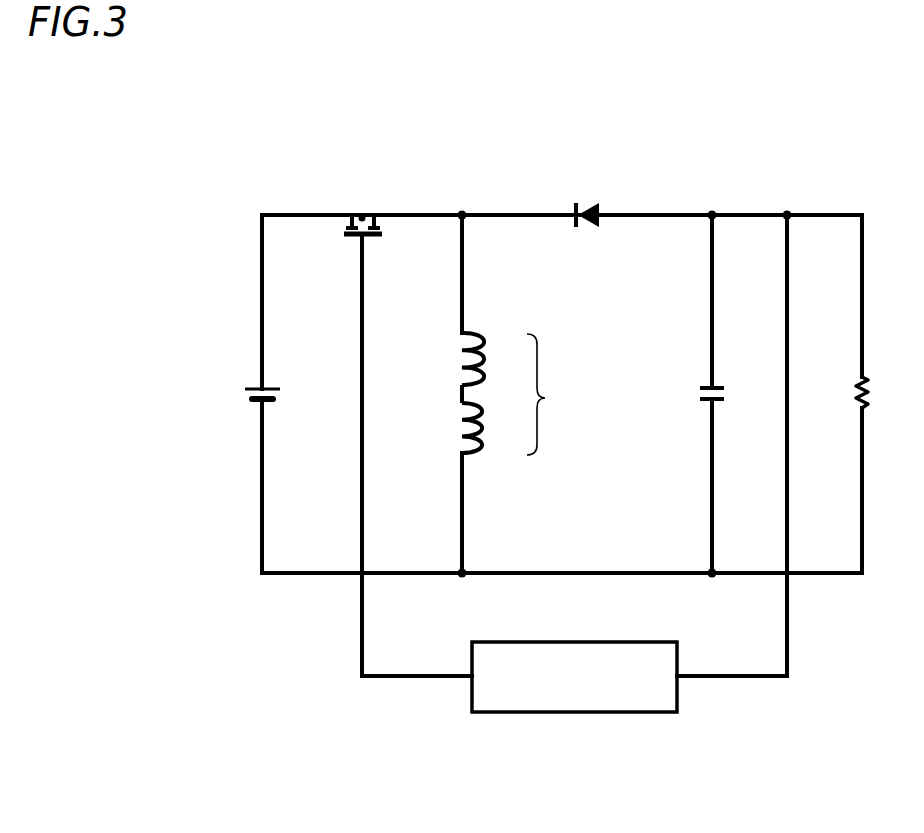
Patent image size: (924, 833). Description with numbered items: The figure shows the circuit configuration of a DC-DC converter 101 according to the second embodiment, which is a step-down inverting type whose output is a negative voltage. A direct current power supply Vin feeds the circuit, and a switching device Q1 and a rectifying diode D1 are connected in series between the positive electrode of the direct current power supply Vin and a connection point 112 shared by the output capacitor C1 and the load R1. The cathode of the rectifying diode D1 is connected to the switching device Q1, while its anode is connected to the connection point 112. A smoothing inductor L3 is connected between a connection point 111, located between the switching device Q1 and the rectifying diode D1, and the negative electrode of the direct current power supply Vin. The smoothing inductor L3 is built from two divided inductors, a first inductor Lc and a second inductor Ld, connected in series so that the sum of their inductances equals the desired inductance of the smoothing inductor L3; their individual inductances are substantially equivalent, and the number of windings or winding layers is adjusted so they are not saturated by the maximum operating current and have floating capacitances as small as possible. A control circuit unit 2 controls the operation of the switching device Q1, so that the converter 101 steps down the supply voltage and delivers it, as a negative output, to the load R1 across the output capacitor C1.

The DC-DC converter 101 is at (246, 59).
The connection point 111 is at (462, 212).
The connection point 112 is at (712, 212).
The control circuit unit 2 is at (570, 713).
The switching device Q1 is at (363, 210).
The rectifying diode D1 is at (589, 200).
The output capacitor C1 is at (731, 392).
The load R1 is at (883, 392).
The smoothing inductor L3 is at (523, 394).
The first inductor Lc is at (487, 359).
The second inductor Ld is at (488, 419).
The direct current power supply Vin is at (237, 397).